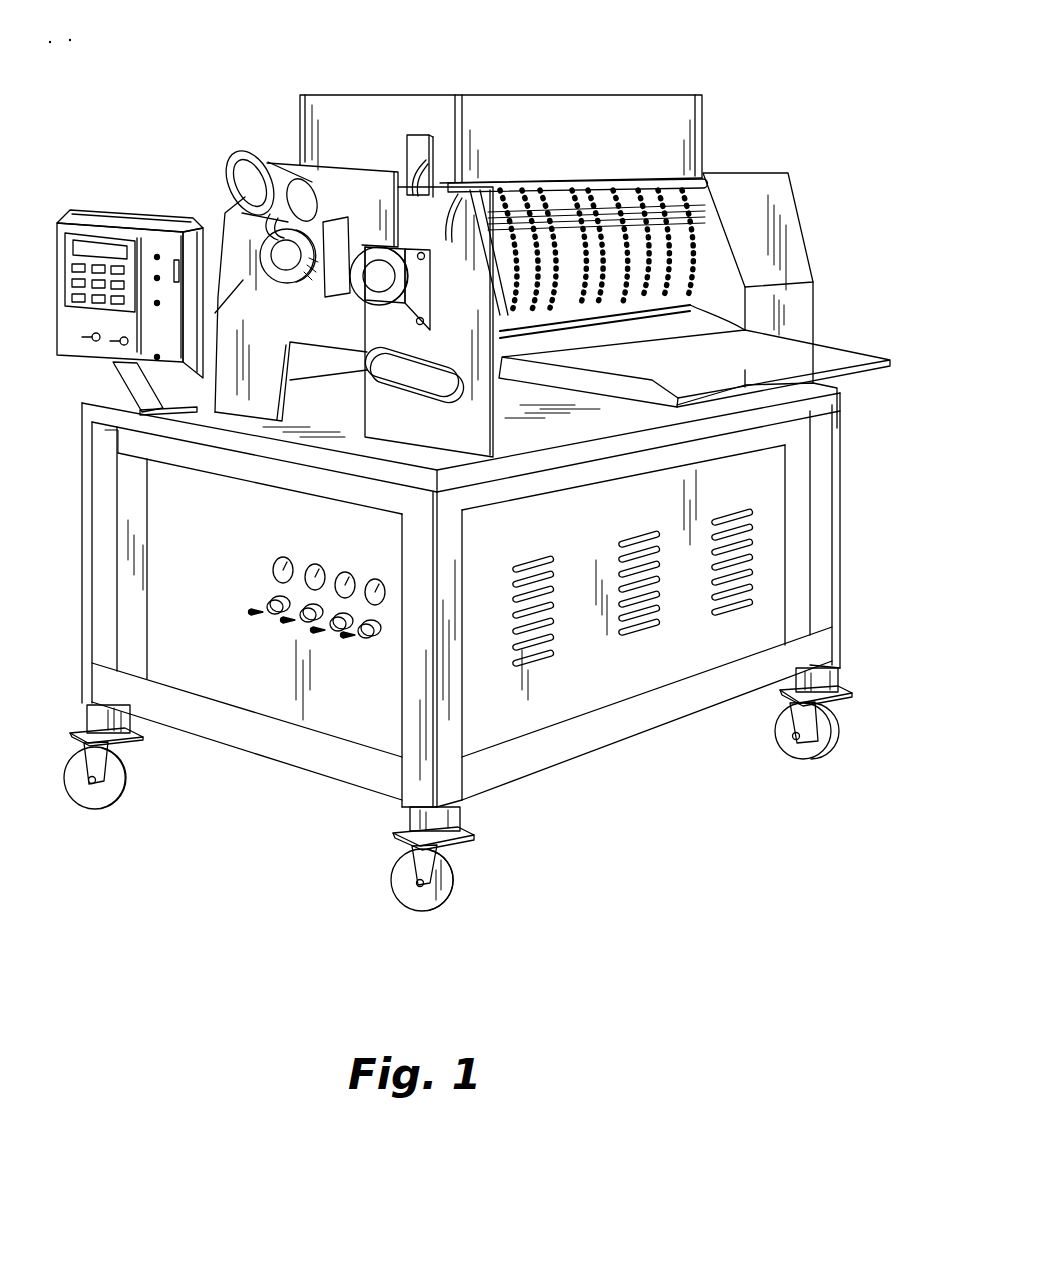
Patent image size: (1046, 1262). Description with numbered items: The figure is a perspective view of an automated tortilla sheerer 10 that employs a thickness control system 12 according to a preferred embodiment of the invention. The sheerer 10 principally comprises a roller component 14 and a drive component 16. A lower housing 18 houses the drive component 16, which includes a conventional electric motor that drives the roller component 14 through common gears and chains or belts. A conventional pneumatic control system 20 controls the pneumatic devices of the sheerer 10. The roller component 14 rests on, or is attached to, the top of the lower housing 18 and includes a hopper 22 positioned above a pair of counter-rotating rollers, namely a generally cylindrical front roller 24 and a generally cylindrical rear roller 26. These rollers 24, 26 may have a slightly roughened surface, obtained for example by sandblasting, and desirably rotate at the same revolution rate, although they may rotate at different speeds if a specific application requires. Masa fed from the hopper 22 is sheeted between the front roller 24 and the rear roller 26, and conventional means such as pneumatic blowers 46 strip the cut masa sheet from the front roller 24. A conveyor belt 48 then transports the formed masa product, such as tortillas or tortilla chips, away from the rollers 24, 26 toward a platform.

The tortilla sheerer 10 is at (477, 493).
The thickness control system 12 is at (118, 203).
The roller component 14 is at (552, 243).
The drive component 16 is at (481, 652).
The lower housing 18 is at (648, 720).
The pneumatic control system 20 is at (256, 577).
The hopper 22 is at (577, 113).
The front roller 24 is at (690, 238).
The rear roller 26 is at (388, 290).
The pneumatic blowers 46 is at (718, 259).
The conveyor belt 48 is at (690, 322).